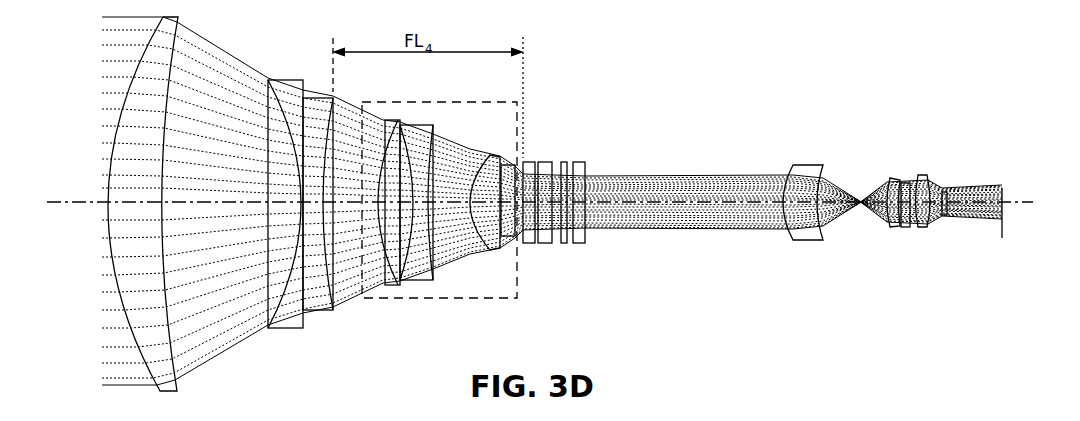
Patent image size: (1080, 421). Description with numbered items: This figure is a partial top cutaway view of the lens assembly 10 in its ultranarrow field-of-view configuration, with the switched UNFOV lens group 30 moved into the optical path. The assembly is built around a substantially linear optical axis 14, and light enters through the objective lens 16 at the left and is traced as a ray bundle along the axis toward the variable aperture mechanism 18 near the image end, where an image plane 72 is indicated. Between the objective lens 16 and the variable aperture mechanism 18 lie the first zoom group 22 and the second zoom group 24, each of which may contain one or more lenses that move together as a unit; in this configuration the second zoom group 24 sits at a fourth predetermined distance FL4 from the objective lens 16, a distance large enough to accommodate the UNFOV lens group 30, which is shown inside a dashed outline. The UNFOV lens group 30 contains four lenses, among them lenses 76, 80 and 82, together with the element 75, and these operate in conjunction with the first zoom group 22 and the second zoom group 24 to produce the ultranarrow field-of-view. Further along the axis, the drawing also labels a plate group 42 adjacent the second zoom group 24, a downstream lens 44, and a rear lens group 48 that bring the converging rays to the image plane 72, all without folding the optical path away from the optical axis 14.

The lens assembly 10 is at (687, 133).
The optical axis 14 is at (66, 198).
The objective lens 16 is at (160, 383).
The variable aperture mechanism 18 is at (947, 215).
The first zoom group 22 is at (347, 333).
The second zoom group 24 is at (551, 247).
The UNFOV lens group 30 is at (468, 306).
The plate group 42 is at (595, 247).
The lens 44 is at (805, 242).
The lens group 48 is at (934, 230).
The image plane 72 is at (1003, 227).
The lens 75 is at (421, 282).
The lens 76 is at (393, 287).
The lens 80 is at (500, 251).
The lens 82 is at (525, 246).